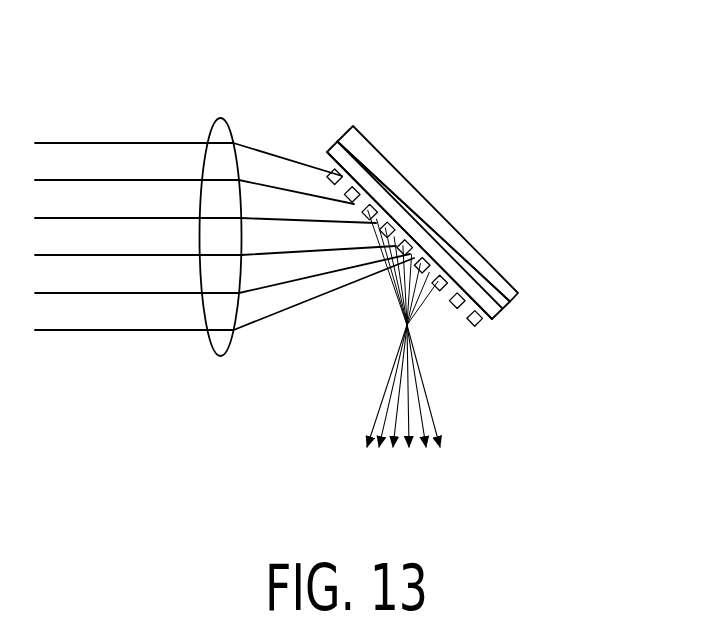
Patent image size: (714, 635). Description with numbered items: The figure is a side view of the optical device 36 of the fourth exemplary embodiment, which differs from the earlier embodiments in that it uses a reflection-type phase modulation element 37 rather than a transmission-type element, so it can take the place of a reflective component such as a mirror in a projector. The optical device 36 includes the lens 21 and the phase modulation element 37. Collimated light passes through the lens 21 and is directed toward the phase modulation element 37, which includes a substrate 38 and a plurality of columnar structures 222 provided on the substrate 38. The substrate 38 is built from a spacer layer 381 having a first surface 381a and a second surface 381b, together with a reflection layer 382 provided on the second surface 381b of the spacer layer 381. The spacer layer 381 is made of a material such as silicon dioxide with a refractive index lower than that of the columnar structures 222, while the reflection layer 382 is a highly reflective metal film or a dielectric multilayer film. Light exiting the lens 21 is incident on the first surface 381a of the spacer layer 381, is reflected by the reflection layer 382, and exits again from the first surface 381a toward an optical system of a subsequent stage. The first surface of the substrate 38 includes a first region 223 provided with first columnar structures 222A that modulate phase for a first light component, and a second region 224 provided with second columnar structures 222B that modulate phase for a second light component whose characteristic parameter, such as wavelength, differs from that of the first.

The lens 21 is at (224, 133).
The optical device 36 is at (265, 122).
The phase modulation element 37 is at (404, 149).
The substrate 38 is at (618, 273).
The spacer layer 381 is at (508, 314).
The reflection layer 382 is at (512, 298).
The first surface 381a is at (492, 315).
The second surface 381b is at (472, 268).
The columnar structures 222 is at (448, 251).
The first columnar structures 222A is at (473, 324).
The second columnar structures 222B is at (331, 172).
The first region 223 is at (438, 320).
The second region 224 is at (330, 205).